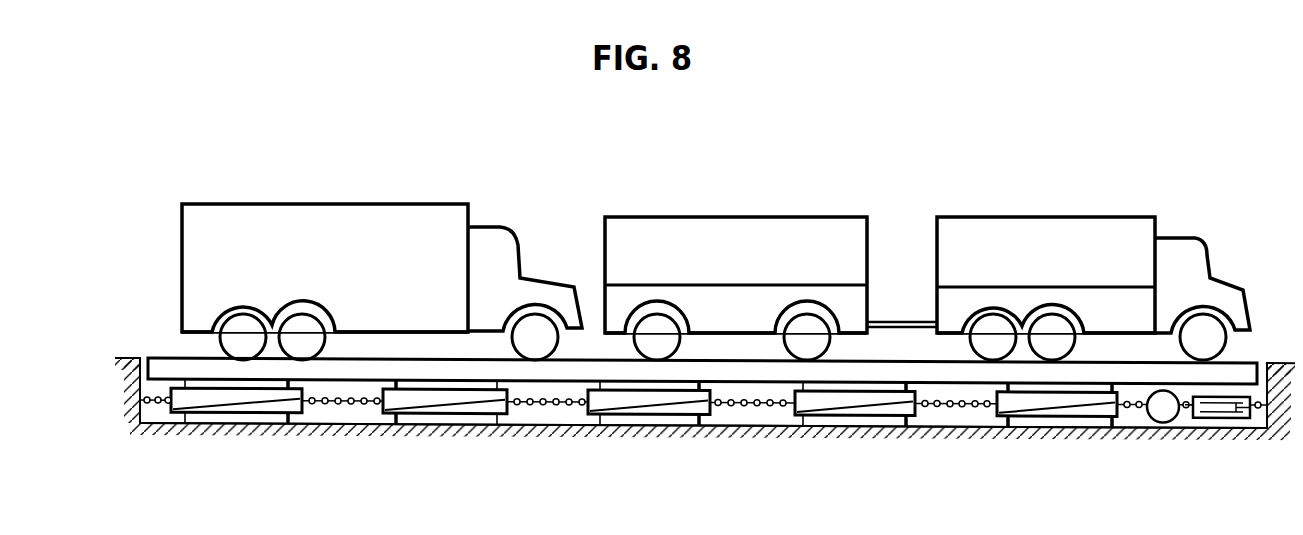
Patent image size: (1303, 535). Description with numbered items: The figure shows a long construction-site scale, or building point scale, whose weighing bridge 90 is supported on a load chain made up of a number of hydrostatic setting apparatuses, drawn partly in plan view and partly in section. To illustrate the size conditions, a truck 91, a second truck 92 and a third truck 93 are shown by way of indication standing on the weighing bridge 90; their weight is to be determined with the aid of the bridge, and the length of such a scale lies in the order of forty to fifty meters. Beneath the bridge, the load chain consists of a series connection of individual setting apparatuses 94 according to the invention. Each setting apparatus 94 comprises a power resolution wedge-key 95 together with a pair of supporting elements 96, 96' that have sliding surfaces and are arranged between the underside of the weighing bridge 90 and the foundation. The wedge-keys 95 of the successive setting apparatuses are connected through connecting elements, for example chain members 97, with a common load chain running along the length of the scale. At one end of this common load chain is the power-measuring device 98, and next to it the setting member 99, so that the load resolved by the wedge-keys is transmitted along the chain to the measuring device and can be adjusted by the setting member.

The weighing bridge 90 is at (158, 357).
The truck 91 is at (303, 215).
The truck 92 is at (723, 228).
The truck 93 is at (1031, 228).
The setting apparatus 94 is at (238, 423).
The power resolution wedge-key 95 is at (197, 400).
The supporting element 96 is at (651, 430).
The supporting element 96' is at (705, 363).
The chain member 97 is at (350, 403).
The power-measuring device 98 is at (1163, 423).
The setting member 99 is at (1222, 421).